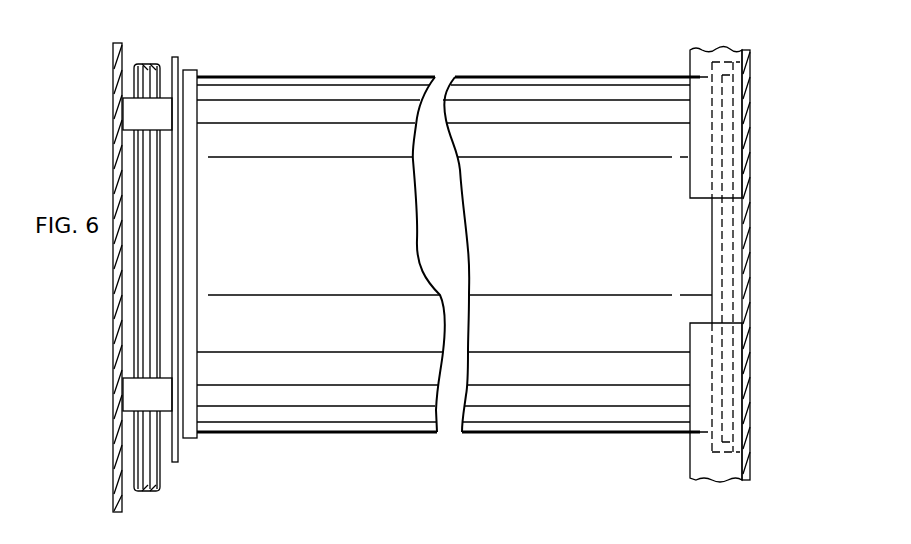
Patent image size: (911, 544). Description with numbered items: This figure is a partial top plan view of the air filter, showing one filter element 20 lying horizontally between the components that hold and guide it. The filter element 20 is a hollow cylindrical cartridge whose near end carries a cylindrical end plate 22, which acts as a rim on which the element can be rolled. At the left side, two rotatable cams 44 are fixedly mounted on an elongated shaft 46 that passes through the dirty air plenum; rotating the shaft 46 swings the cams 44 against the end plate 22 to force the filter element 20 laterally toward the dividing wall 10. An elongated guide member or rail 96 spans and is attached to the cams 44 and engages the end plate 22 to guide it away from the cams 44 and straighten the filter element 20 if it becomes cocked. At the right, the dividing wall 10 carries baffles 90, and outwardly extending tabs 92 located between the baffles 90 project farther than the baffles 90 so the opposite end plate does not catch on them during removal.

The dividing wall 10 is at (748, 269).
The filter element 20 is at (368, 75).
The cylindrical end plate 22 is at (188, 72).
The rotatable cams 44 is at (128, 114).
The elongated shaft 46 is at (141, 64).
The baffles 90 is at (745, 201).
The tabs 92 is at (710, 52).
The rail 96 is at (180, 360).